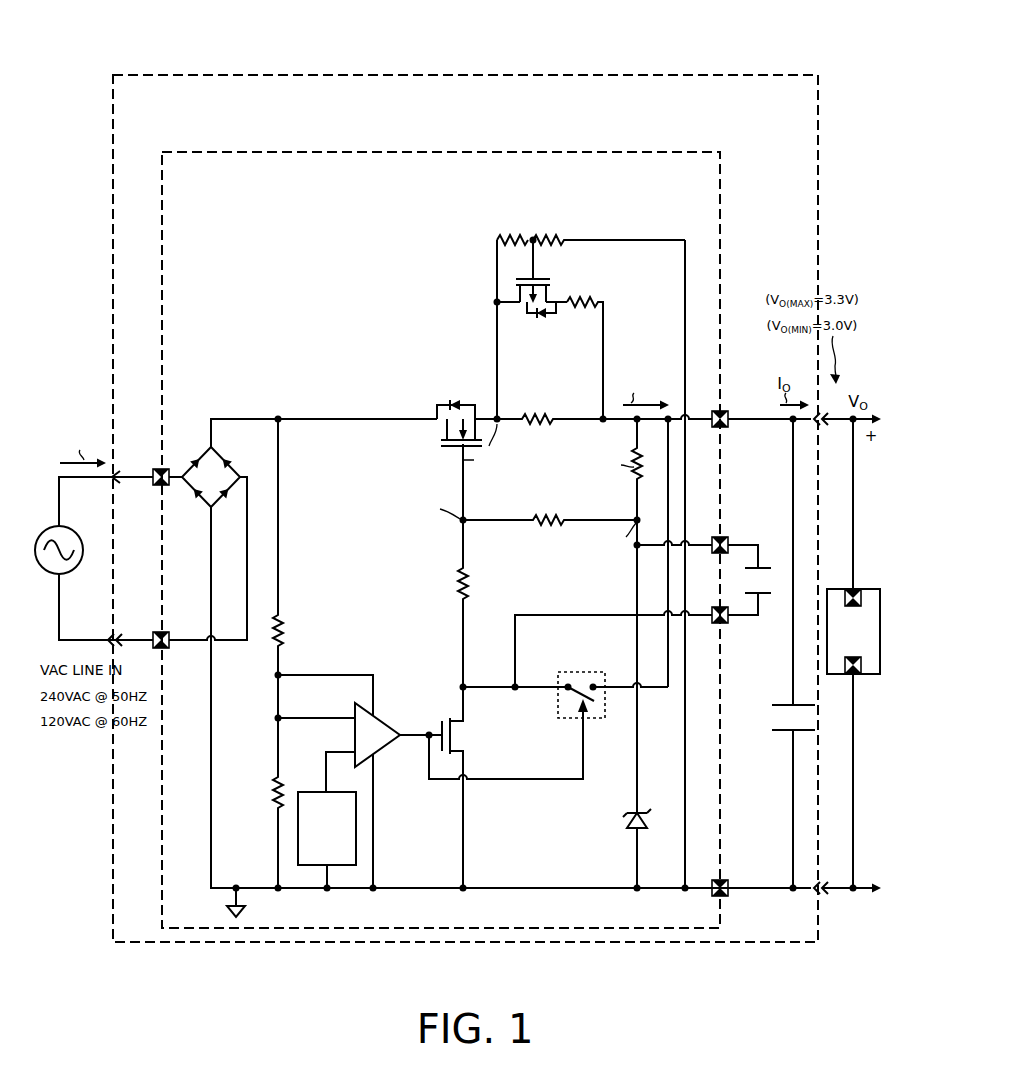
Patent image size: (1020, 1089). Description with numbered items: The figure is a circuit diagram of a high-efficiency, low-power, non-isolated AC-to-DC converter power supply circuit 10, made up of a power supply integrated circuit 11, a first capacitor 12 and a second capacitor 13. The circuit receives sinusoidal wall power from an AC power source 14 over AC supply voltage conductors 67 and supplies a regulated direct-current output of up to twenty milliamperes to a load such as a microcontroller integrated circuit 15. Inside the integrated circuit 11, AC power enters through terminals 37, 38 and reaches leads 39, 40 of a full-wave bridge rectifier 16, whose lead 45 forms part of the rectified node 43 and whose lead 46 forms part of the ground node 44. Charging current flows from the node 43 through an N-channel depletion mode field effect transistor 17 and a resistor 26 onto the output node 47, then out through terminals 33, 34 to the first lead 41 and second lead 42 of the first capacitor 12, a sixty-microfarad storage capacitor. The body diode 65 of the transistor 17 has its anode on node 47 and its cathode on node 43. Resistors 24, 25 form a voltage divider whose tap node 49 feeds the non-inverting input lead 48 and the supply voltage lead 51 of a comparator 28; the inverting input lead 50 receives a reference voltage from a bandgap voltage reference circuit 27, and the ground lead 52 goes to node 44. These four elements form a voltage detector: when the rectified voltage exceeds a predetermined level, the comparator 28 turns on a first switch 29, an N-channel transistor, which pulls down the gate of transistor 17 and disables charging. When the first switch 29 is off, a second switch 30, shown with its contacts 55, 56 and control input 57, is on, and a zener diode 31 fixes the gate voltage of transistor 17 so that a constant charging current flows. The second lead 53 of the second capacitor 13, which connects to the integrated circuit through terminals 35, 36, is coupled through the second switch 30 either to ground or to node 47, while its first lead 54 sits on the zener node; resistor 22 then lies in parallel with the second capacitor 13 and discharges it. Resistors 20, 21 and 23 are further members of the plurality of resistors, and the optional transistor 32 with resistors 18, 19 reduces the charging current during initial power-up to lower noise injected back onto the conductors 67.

The power supply circuit 10 is at (645, 75).
The power supply integrated circuit 11 is at (409, 152).
The first capacitor 12 is at (775, 652).
The second capacitor 13 is at (752, 556).
The AC power source 14 is at (72, 573).
The microcontroller integrated circuit 15 is at (853, 652).
The full-wave bridge rectifier 16 is at (222, 473).
The N-channel depletion mode field effect transistor 17 is at (444, 394).
The resistor 18 is at (516, 237).
The resistor 19 is at (560, 237).
The resistor 20 is at (576, 310).
The resistor 21 is at (612, 482).
The resistor 22 is at (457, 584).
The resistor 23 is at (548, 516).
The resistor 24 is at (283, 635).
The resistor 25 is at (276, 796).
The resistor 26 is at (552, 422).
The bandgap voltage reference circuit 27 is at (327, 840).
The comparator 28 is at (351, 735).
The first switch 29 is at (474, 742).
The second switch 30 is at (548, 704).
The zener diode 31 is at (626, 822).
The PFET 32 is at (560, 271).
The terminal 33 is at (726, 428).
The terminal 34 is at (727, 887).
The terminal 35 is at (714, 540).
The terminal 36 is at (714, 631).
The terminal 37 is at (168, 486).
The terminal 38 is at (165, 649).
The lead or node of the bridge rectifier 39 is at (184, 471).
The lead or node of the bridge rectifier 40 is at (243, 472).
The capacitor lead 41 is at (792, 704).
The second lead of the first capacitor 42 is at (790, 733).
The VR node 43 is at (253, 410).
The ground node 44 is at (501, 892).
The lead of the bridge rectifier 45 is at (218, 446).
The lead of the bridge rectifier 46 is at (216, 509).
The VO node 47 is at (676, 401).
The non-inverting input lead 48 is at (346, 716).
The tap node 49 is at (276, 716).
The inverting input lead 50 is at (351, 753).
The supply voltage lead 51 is at (383, 715).
The ground lead 52 is at (381, 761).
The second lead of the second capacitor 53 is at (770, 598).
The first lead of the second capacitor 54 is at (772, 571).
The switch terminal a 55 is at (560, 683).
The switch terminal c 56 is at (600, 683).
The switch control terminal b 57 is at (578, 721).
The body diode 65 is at (452, 399).
The AC supply voltage conductors 67 is at (90, 479).